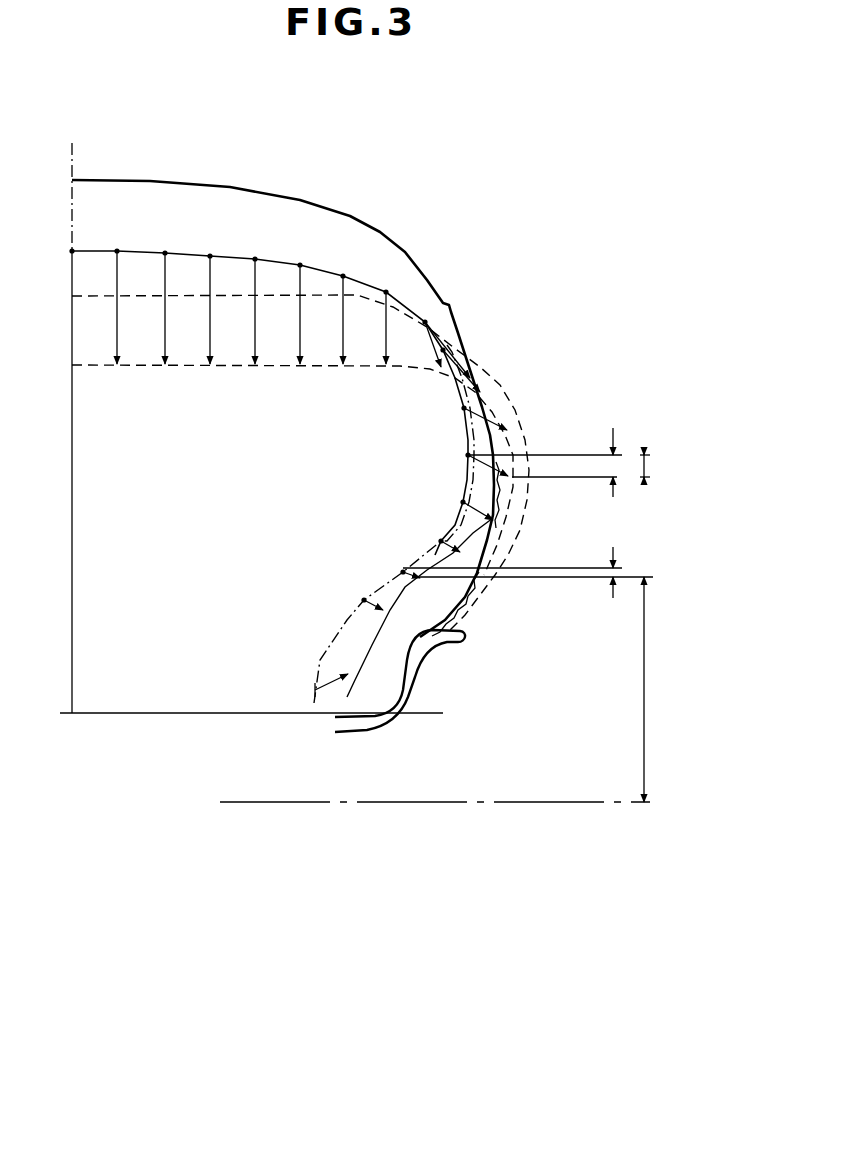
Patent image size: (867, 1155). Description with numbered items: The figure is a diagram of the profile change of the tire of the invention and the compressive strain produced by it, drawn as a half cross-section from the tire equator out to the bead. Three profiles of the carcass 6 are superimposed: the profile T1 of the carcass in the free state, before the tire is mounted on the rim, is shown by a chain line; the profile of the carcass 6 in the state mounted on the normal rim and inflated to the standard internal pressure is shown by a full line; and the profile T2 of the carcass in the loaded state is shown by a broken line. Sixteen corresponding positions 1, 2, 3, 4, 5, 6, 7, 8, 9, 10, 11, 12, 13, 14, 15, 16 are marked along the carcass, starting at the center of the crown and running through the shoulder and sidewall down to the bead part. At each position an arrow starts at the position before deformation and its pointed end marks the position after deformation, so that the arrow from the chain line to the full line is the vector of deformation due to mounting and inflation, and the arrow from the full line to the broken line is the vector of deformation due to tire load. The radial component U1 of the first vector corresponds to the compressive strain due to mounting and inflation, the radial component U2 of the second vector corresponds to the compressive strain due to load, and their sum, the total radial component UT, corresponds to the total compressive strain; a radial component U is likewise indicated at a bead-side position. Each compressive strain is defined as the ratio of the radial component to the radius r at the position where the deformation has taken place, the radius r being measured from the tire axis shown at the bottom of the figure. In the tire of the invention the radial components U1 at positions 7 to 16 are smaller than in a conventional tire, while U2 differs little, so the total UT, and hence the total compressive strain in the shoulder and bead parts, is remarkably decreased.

The carcass position 1 is at (62, 259).
The carcass position 2 is at (106, 306).
The carcass position 3 is at (154, 307).
The carcass position 4 is at (200, 308).
The carcass position 5 is at (245, 310).
The carcass 6 is at (277, 262).
The carcass position 7 is at (343, 276).
The carcass position 8 is at (386, 292).
The carcass position 9 is at (425, 322).
The carcass position 10 is at (443, 350).
The carcass position 11 is at (464, 408).
The carcass position 12 is at (468, 455).
The carcass position 13 is at (463, 502).
The carcass position 14 is at (441, 541).
The carcass position 15 is at (403, 572).
The carcass position 16 is at (364, 600).
The free-state carcass profile T1 is at (312, 663).
The loaded-state carcass profile T2 is at (153, 366).
The radial component of deformation vector U is at (625, 568).
The radial component due to mounting and inflation U1 is at (623, 455).
The radial component due to tire load U2 is at (612, 468).
The total radial component UT is at (650, 464).
The radius r is at (645, 690).